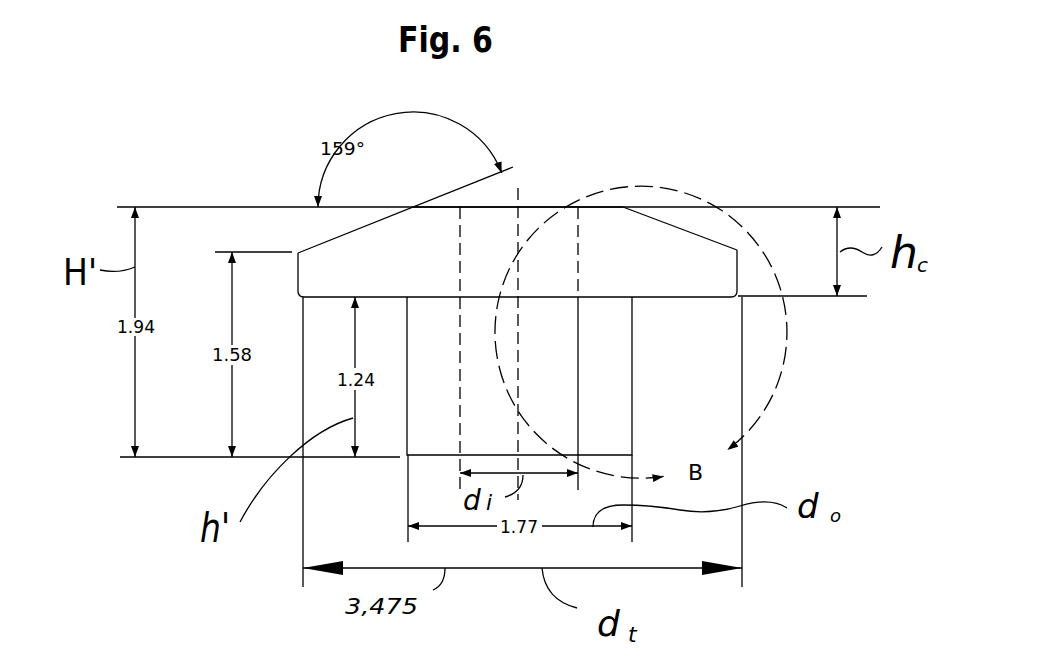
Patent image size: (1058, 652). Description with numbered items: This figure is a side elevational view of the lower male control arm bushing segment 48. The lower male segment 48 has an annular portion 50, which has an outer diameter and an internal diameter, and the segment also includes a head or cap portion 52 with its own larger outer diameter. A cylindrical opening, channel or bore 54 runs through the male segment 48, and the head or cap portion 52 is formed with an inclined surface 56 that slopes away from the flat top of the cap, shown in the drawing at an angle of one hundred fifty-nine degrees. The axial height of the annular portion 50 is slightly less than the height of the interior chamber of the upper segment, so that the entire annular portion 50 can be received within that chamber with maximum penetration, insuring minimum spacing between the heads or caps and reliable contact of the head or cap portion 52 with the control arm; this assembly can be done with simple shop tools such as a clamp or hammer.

The lower male segment 48 is at (613, 173).
The annular portion 50 is at (403, 417).
The head or cap portion 52 is at (327, 242).
The cylindrical opening, channel or bore 54 is at (578, 343).
The inclined surface 56 is at (698, 235).